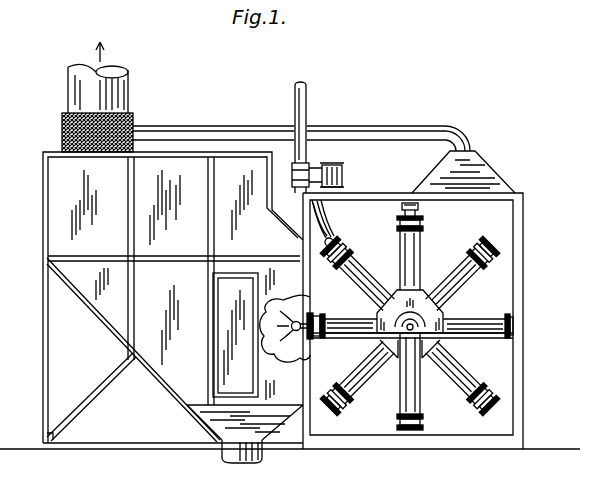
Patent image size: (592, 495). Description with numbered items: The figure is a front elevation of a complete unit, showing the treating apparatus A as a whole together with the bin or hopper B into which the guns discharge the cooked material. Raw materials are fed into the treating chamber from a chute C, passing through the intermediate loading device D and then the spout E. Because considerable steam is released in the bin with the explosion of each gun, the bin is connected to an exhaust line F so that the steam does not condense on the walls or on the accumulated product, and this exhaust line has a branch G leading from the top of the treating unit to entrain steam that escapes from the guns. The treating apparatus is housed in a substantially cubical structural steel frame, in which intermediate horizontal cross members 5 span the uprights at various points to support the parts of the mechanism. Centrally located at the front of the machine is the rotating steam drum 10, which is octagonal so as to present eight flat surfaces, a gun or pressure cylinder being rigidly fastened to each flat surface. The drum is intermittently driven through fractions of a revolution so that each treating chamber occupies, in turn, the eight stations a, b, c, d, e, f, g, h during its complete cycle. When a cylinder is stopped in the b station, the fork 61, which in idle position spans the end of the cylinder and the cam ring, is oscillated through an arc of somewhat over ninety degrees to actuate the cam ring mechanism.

The treating apparatus A is at (523, 235).
The bin or hopper B is at (97, 303).
The chute C is at (307, 110).
The intermediate loading device D is at (343, 180).
The spout E is at (328, 226).
The exhaust line F is at (130, 101).
The branch G is at (385, 127).
The station position a is at (368, 272).
The station position b is at (424, 253).
The station position c is at (472, 251).
The station position d is at (490, 319).
The station position e is at (473, 381).
The station position f is at (400, 411).
The station position g is at (352, 373).
The station position h is at (350, 315).
The rotating steam drum 10 is at (443, 313).
The intermediate horizontal cross member 5 is at (470, 339).
The fork 61 is at (420, 210).